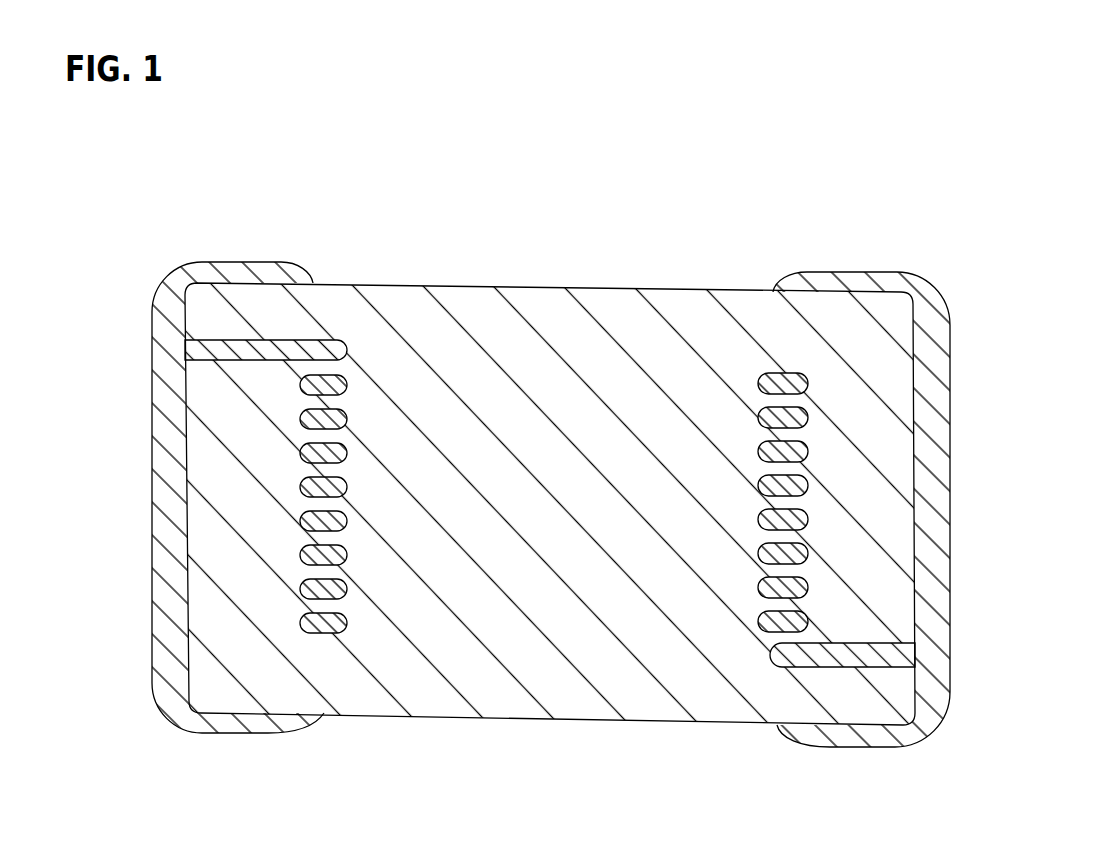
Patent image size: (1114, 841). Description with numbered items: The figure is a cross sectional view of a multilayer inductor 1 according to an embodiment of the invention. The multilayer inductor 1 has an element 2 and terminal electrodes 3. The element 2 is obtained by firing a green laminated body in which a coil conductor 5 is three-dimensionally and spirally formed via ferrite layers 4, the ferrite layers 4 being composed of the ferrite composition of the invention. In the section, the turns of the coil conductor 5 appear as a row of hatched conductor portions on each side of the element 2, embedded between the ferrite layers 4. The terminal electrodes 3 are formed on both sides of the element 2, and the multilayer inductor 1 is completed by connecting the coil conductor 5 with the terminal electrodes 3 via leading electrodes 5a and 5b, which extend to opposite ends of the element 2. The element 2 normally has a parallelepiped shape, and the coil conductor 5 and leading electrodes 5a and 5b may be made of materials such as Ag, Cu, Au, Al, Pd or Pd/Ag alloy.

The multilayer inductor 1 is at (887, 245).
The element 2 is at (1007, 533).
The terminal electrodes 3 is at (176, 484).
The ferrite layers 4 is at (789, 498).
The coil conductor 5 is at (804, 587).
The leading electrode 5a is at (845, 667).
The leading electrode 5b is at (271, 340).